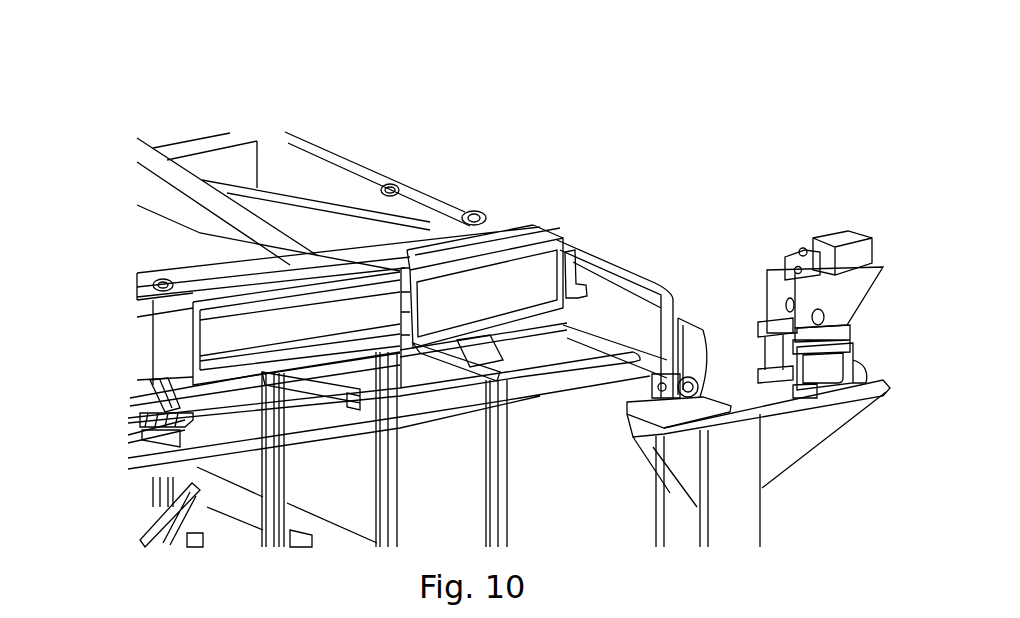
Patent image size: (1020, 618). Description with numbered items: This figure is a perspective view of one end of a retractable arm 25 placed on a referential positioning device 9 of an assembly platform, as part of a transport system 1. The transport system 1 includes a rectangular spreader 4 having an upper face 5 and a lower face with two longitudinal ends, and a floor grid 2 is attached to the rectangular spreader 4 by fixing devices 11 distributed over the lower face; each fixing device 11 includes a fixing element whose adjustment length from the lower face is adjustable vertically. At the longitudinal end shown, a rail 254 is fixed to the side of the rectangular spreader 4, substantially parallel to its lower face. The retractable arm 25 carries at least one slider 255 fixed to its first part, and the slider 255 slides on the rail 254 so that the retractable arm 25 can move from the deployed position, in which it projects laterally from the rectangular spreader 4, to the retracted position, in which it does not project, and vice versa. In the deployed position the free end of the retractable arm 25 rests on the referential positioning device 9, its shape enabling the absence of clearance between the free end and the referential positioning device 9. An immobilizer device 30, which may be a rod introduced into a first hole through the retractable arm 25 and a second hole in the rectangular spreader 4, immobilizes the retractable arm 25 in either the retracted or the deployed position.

The transport system 1 is at (452, 142).
The floor grid 2 is at (150, 458).
The rectangular spreader 4 is at (330, 140).
The upper face 5 is at (203, 140).
The referential positioning device 9 is at (700, 378).
The fixing device 11 is at (142, 405).
The retractable arm 25 is at (631, 267).
The immobilizer device 30 is at (574, 252).
The rail 254 is at (358, 330).
The slider 255 is at (513, 237).